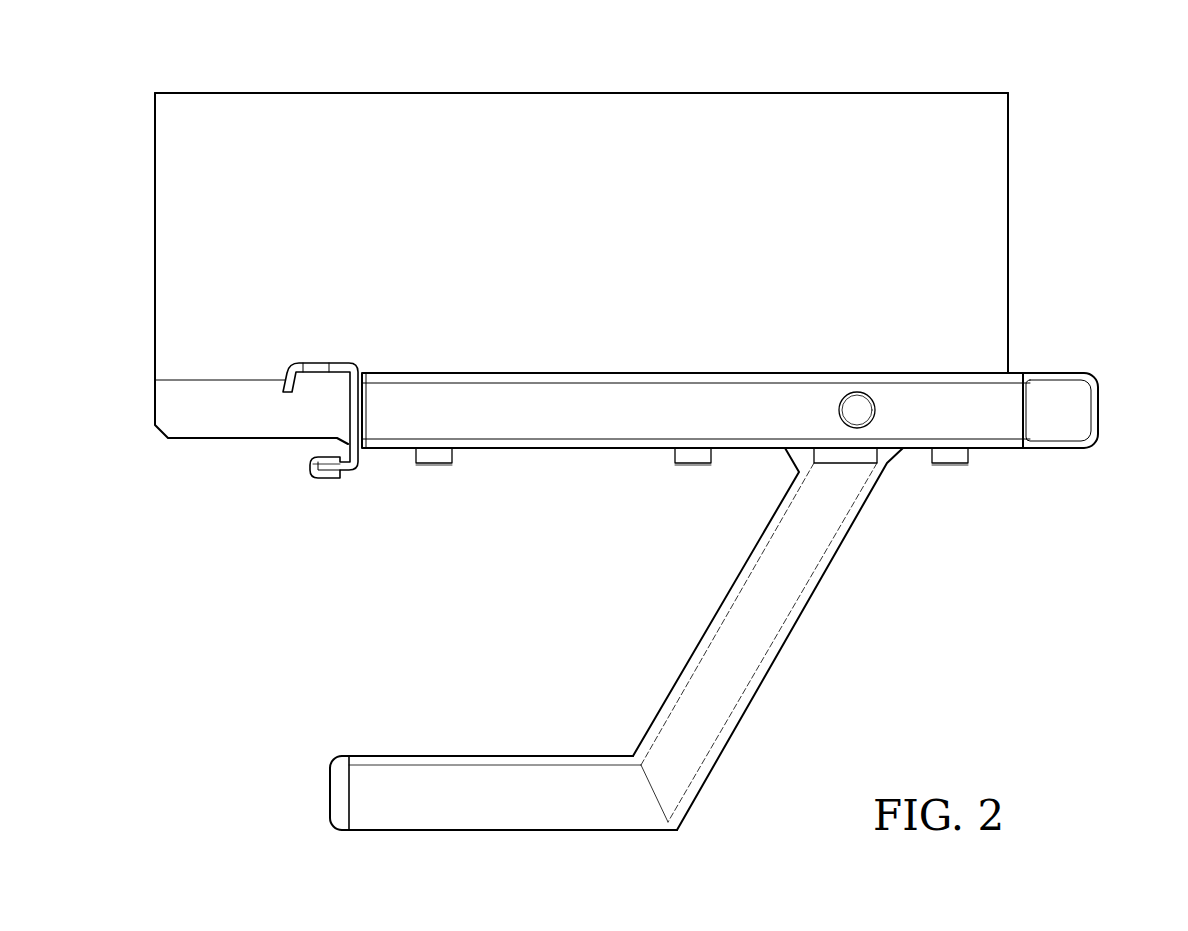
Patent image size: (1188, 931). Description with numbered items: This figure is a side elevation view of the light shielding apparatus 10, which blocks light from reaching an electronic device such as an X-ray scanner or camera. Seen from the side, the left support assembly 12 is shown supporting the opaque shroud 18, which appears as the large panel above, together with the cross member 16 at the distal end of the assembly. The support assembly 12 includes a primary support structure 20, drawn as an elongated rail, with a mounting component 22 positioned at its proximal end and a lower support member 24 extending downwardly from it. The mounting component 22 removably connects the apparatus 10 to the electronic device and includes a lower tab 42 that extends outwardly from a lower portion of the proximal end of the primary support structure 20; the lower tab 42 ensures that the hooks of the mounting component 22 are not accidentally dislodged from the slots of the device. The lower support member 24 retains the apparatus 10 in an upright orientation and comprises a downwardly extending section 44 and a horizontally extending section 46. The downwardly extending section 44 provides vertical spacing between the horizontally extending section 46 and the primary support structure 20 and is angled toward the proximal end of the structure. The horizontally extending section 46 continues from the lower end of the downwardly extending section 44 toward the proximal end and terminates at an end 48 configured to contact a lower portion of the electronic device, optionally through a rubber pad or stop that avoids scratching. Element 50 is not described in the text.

The light shielding apparatus 10 is at (661, 428).
The left support assembly 12 is at (701, 546).
The cross member 16 is at (1098, 398).
The opaque shroud 18 is at (813, 78).
The primary support structure 20 is at (507, 428).
The mounting component 22 is at (293, 339).
The lower support member 24 is at (605, 639).
The lower tab 42 is at (310, 487).
The downwardly extending section 44 is at (730, 633).
The horizontally extending section 46 is at (486, 786).
The end 48 is at (330, 773).
The panel 50 is at (518, 147).